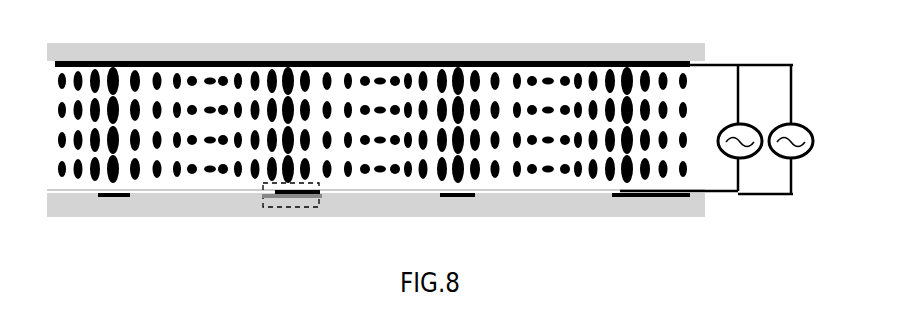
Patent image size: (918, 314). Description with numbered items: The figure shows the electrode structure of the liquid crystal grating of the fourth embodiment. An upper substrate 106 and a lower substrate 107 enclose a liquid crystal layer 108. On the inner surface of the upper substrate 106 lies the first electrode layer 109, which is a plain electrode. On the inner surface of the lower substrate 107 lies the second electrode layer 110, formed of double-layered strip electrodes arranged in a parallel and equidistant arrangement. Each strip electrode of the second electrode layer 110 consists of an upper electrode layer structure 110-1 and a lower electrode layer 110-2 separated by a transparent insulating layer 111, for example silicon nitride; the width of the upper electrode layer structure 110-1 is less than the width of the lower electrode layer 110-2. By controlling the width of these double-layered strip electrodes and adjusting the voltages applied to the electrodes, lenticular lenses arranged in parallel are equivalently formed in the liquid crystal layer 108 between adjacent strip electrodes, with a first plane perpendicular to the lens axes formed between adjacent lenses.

The upper substrate 106 is at (530, 52).
The lower substrate 107 is at (676, 207).
The liquid crystal layer 108 is at (670, 118).
The first electrode layer 109 is at (384, 67).
The second electrode layer 110 is at (291, 221).
The upper electrode layer structure 110-1 is at (300, 190).
The lower electrode layer 110-2 is at (287, 207).
The transparent insulating layer 111 is at (542, 193).